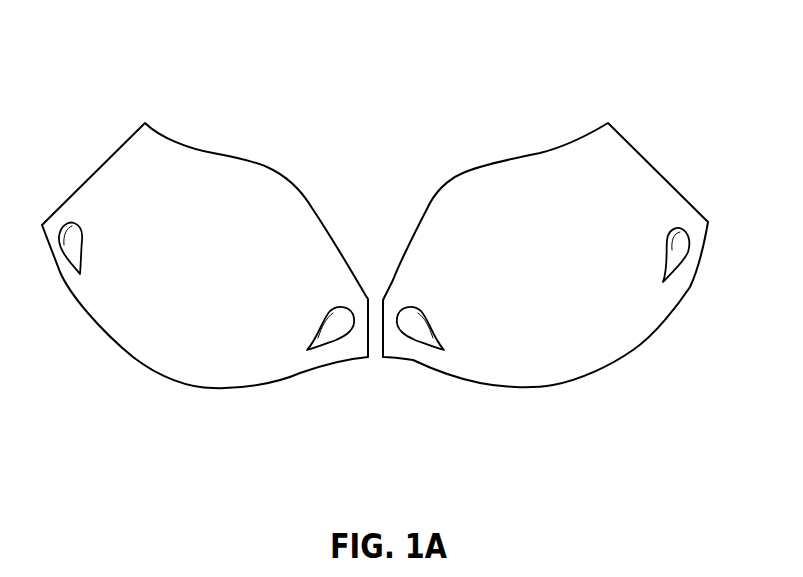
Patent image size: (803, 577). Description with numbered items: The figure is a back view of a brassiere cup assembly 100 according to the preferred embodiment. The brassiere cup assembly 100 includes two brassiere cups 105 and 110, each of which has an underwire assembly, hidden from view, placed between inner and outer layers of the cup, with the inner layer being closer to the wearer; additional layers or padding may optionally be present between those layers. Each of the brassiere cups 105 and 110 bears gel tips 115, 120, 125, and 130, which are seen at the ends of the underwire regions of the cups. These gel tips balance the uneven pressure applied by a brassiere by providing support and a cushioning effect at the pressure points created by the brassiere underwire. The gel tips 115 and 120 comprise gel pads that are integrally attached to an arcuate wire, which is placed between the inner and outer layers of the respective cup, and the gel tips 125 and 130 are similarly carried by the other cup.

The brassiere cup assembly 100 is at (166, 94).
The brassiere cup 105 is at (263, 207).
The brassiere cup 110 is at (548, 187).
The gel tip 115 is at (67, 272).
The gel tip 120 is at (337, 333).
The gel tip 125 is at (418, 333).
The gel tip 130 is at (680, 262).